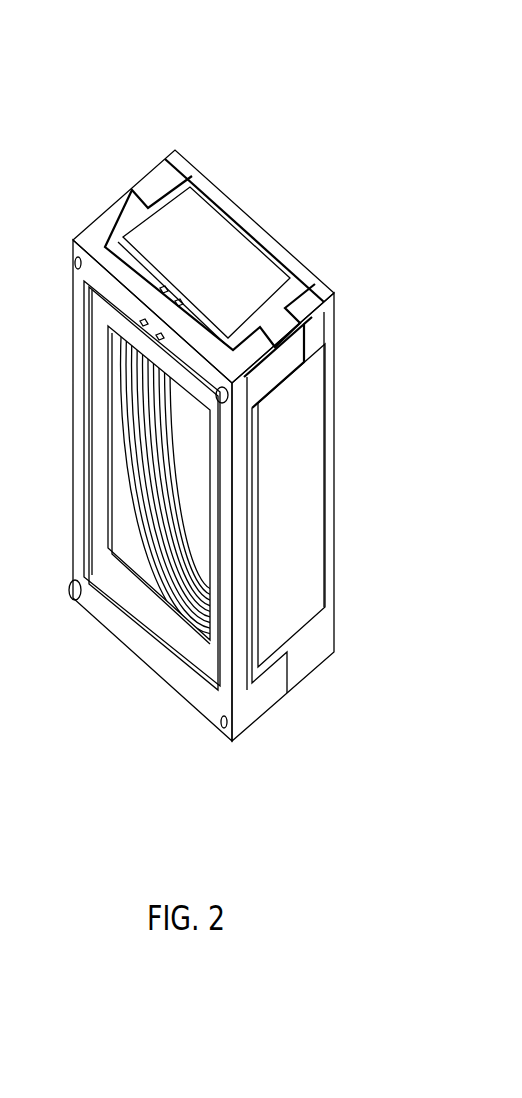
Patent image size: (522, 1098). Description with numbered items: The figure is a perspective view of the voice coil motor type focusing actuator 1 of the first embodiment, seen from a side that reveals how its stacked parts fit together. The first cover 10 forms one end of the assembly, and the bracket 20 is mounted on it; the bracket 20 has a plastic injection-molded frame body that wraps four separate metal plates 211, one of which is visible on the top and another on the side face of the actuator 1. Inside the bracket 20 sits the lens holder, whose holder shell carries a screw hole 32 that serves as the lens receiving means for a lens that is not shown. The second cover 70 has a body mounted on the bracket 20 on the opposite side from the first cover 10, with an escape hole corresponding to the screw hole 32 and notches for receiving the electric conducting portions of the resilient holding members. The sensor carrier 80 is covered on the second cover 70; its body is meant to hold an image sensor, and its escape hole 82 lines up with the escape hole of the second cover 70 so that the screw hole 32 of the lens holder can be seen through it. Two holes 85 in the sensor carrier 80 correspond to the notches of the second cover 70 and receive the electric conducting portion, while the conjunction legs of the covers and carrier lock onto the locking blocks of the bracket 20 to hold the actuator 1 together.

The camera module 1 is at (75, 123).
The first cover 10 is at (263, 220).
The bracket 20 is at (147, 168).
The metal plates 211 is at (194, 226).
The screw hole 32 is at (173, 540).
The second cover 70 is at (305, 683).
The sensor carrier 80 is at (264, 722).
The escape hole 82 is at (122, 563).
The holes 85 is at (157, 340).